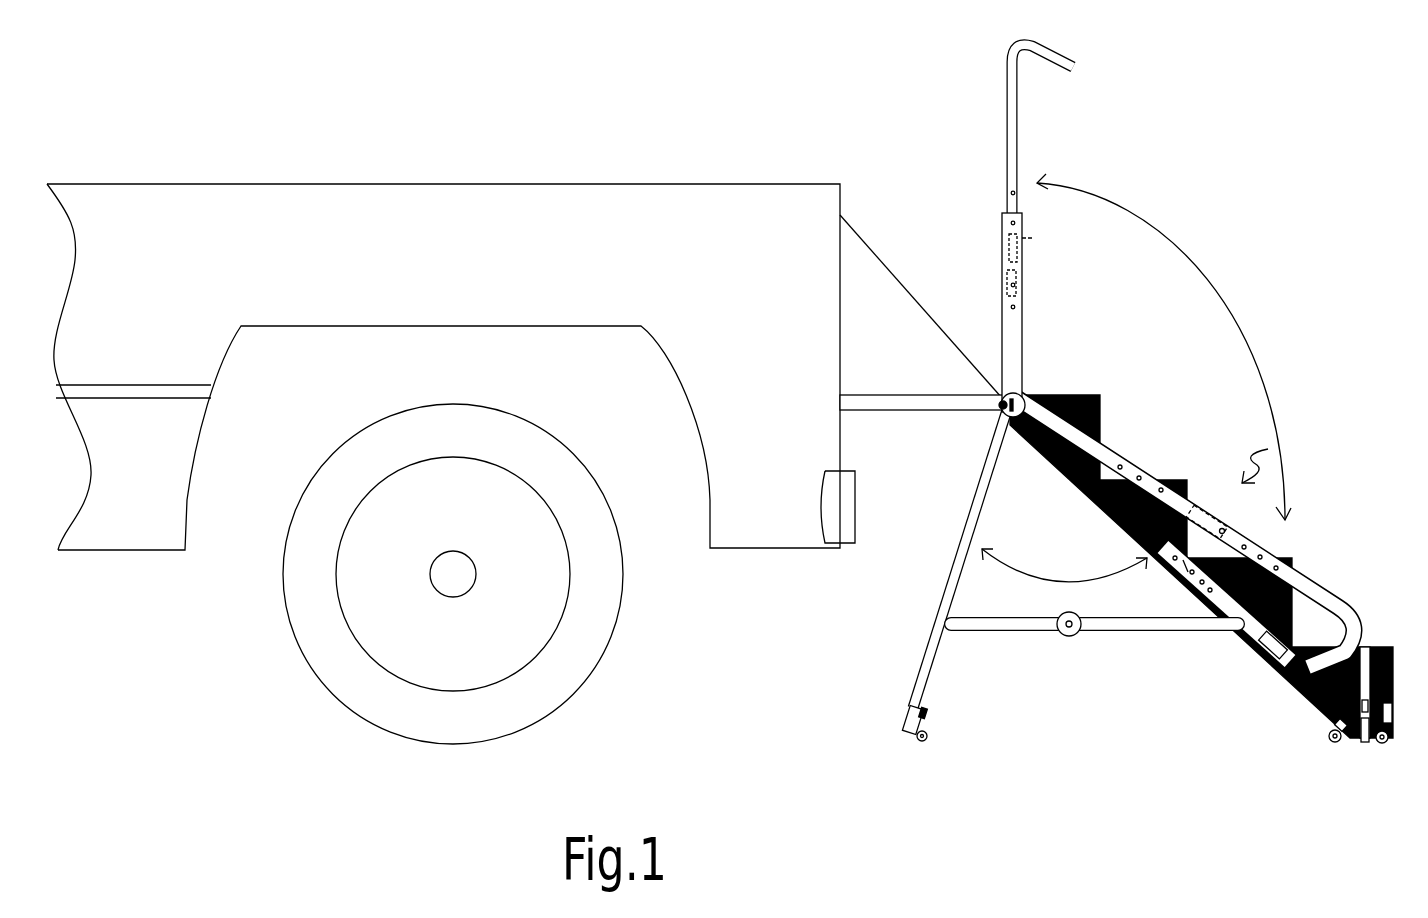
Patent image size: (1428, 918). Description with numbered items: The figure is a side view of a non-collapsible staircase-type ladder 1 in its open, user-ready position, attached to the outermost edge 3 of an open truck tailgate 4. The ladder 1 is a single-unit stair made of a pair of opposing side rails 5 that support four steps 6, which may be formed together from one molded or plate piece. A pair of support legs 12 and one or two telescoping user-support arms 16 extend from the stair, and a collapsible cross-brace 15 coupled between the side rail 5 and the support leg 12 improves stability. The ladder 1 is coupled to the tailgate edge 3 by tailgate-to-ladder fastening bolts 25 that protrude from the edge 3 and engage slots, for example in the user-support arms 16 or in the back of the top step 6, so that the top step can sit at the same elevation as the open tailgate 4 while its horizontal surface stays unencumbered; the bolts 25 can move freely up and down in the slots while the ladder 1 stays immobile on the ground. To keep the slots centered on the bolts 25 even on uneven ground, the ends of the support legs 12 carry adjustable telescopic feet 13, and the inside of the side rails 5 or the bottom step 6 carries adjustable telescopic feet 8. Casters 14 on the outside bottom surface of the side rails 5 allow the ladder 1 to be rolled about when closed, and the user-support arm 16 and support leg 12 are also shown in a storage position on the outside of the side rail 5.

The non-collapsible staircase-type ladder 1 is at (1258, 463).
The outermost edge of tailgate 3 is at (1000, 412).
The truck tailgate 4 is at (882, 393).
The side rails 5 is at (1298, 689).
The steps 6 is at (1050, 395).
The adjustable telescopic feet 8 is at (1365, 743).
The support legs 12 is at (1135, 522).
The adjustable telescopic feet 13 is at (905, 740).
The casters 14 is at (1335, 725).
The collapsible cross-brace 15 is at (1102, 627).
The telescoping user-support arms 16 is at (1013, 153).
The tailgate-to-ladder fastening bolts 25 is at (1002, 396).